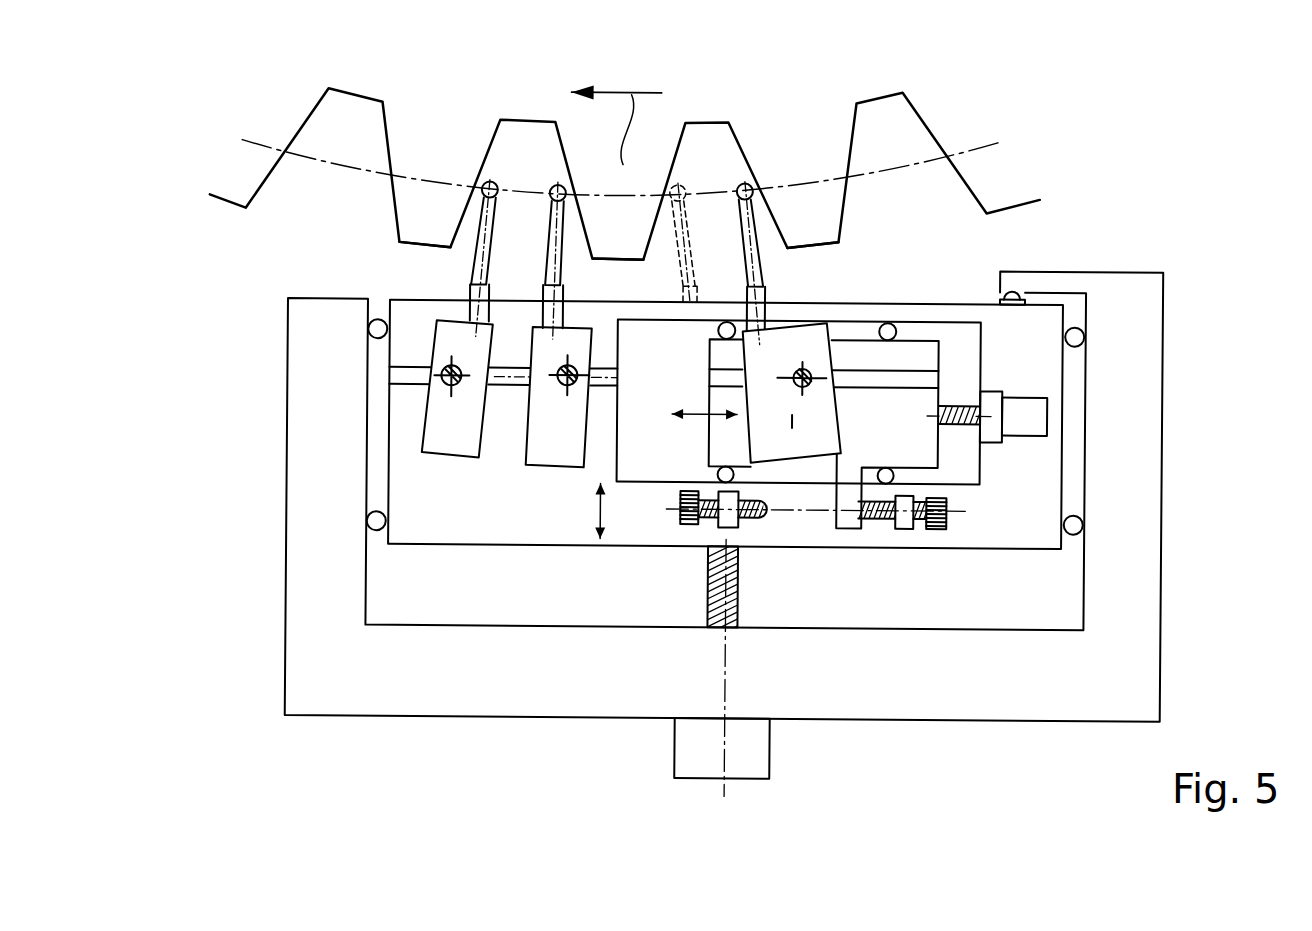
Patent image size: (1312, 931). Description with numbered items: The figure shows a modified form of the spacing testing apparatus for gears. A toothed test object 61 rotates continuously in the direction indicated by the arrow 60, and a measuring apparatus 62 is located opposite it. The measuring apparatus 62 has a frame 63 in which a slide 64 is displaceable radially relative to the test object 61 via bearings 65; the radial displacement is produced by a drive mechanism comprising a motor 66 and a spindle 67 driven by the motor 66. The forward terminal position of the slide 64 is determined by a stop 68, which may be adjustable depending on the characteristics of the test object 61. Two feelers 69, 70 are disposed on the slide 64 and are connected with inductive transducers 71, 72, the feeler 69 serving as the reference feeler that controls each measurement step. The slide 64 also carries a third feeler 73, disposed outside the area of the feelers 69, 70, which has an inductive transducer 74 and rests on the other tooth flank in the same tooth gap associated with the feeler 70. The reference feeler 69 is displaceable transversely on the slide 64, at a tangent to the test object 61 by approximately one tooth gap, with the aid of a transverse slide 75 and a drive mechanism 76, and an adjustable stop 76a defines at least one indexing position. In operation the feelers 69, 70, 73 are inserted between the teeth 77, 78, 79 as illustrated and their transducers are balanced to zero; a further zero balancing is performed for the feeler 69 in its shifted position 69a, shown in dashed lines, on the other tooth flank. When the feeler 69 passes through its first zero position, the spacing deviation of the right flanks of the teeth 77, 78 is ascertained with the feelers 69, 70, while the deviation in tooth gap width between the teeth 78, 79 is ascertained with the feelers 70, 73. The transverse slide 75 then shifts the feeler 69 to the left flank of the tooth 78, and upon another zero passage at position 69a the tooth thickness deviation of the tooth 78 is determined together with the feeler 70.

The arrow 60 is at (622, 167).
The test object 61 is at (740, 108).
The measuring apparatus 62 is at (262, 637).
The frame 63 is at (1117, 497).
The slide 64 is at (1003, 501).
The bearings 65 is at (368, 521).
The motor 66 is at (757, 735).
The spindle 67 is at (707, 600).
The stop 68 is at (1013, 291).
The reference feeler 69 is at (752, 185).
The shifted position of the reference feeler 69a is at (688, 194).
The feeler 70 is at (549, 185).
The inductive transducer 71 is at (815, 434).
The inductive transducer 72 is at (567, 443).
The third feeler 73 is at (481, 181).
The inductive transducer 74 is at (435, 416).
The transverse slide 75 is at (888, 418).
The drive mechanism 76 is at (1030, 402).
The adjustable stop 76a is at (767, 511).
The tooth 77 is at (817, 207).
The tooth 78 is at (623, 225).
The tooth 79 is at (437, 223).